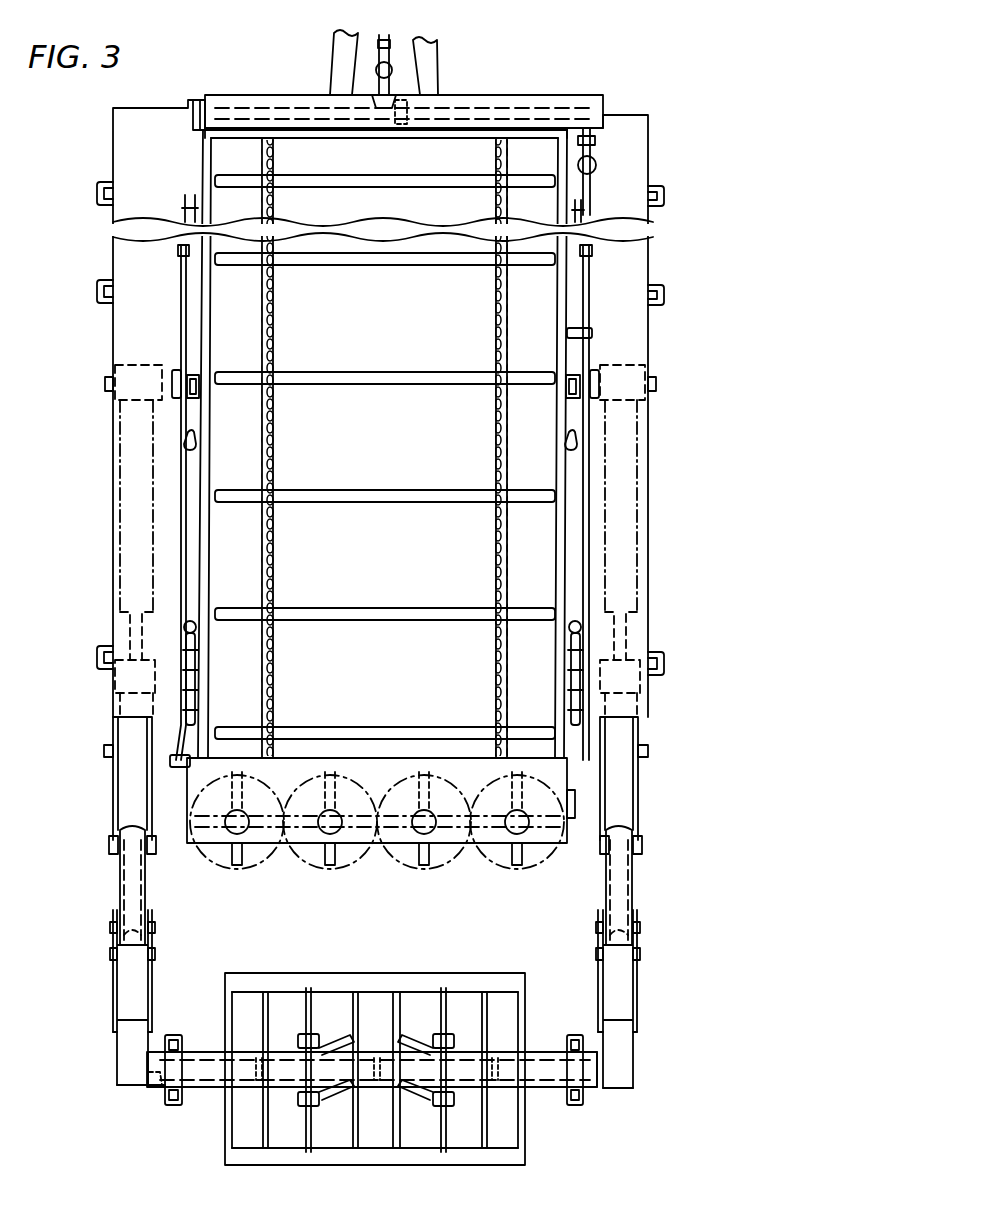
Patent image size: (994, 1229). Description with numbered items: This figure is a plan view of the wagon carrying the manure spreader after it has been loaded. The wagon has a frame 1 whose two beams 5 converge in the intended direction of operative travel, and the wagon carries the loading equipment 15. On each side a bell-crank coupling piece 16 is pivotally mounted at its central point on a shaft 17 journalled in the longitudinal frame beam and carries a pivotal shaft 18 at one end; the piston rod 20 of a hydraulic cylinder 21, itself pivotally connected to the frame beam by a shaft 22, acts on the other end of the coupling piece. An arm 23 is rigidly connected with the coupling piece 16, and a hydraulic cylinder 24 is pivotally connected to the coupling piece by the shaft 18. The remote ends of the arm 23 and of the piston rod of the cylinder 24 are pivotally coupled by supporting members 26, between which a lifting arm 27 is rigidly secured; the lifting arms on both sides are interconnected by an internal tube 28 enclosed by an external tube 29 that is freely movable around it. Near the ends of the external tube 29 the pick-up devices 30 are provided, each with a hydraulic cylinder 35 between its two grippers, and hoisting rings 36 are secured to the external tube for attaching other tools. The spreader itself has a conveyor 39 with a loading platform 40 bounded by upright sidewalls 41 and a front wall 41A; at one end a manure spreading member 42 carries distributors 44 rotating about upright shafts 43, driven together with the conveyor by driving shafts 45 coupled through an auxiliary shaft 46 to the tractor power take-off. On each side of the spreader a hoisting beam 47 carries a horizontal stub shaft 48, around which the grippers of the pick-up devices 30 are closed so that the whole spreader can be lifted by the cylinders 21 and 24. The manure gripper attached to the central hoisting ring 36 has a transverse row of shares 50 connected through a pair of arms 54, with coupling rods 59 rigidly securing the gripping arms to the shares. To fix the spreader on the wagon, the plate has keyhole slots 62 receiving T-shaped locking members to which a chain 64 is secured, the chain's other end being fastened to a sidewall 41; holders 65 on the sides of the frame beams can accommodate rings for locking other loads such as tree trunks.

The frame 1 is at (108, 252).
The beams 5 is at (334, 56).
The loading equipment 15 is at (162, 966).
The bell-crank coupling piece 16 is at (152, 796).
The shaft 17 is at (104, 752).
The pivotal shaft 18 is at (108, 846).
The piston rod 20 is at (124, 622).
The hydraulic cylinder 21 is at (114, 478).
The shaft 22 is at (105, 385).
The arm 23 is at (118, 890).
The hydraulic cylinder 24 is at (142, 898).
The supporting members 26 is at (114, 992).
The lifting arm 27 is at (120, 1042).
The tube 28 is at (148, 1078).
The external tube 29 is at (148, 1090).
The pick-up devices 30 is at (170, 1036).
The hydraulic cylinder 35 is at (162, 1094).
The hoisting rings 36 is at (258, 1052).
The conveyor 39 is at (442, 492).
The loading platform 40 is at (412, 566).
The upright sidewalls 41 is at (197, 274).
The front wall 41A is at (304, 154).
The manure spreading member 42 is at (286, 858).
The upright shafts 43 is at (338, 838).
The distributors 44 is at (500, 868).
The driving shafts 45 is at (180, 322).
The auxiliary shaft 46 is at (386, 40).
The hoisting beam 47 is at (200, 394).
The stub shaft 48 is at (172, 370).
The shares 50 is at (398, 1022).
The arms 54 is at (432, 1104).
The coupling rods 59 is at (392, 972).
The keyhole slots 62 is at (198, 444).
The chain 64 is at (181, 217).
The holders 65 is at (666, 258).